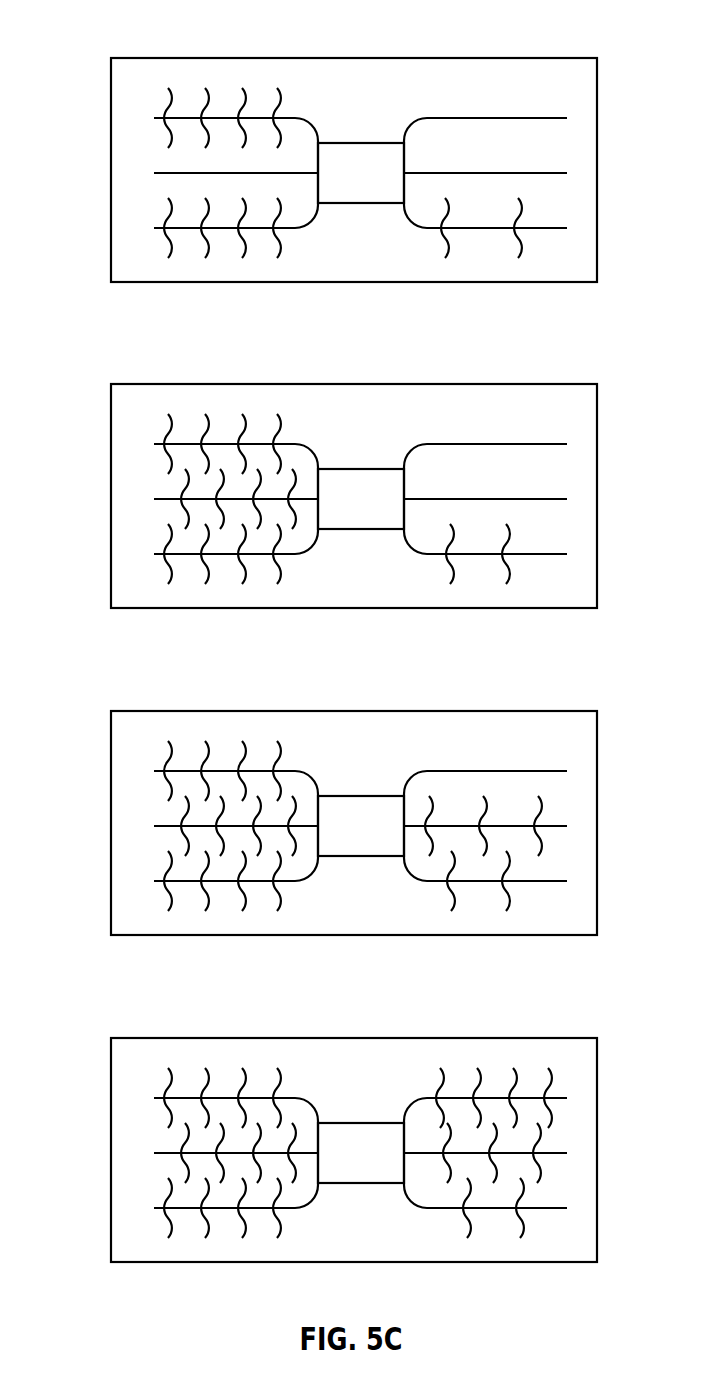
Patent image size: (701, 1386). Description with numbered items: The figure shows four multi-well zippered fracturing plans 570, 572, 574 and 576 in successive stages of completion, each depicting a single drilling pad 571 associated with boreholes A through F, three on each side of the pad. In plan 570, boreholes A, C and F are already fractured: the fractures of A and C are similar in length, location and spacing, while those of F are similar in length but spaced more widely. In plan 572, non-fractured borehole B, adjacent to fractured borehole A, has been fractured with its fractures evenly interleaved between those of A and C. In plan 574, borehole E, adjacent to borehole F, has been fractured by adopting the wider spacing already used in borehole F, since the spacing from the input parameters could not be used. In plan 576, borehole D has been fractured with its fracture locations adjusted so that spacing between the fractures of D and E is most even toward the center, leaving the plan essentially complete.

The multi-well zippered fracturing plan 570 is at (137, 42).
The drilling pad 571 is at (361, 663).
The multi-well zippered fracturing plan 572 is at (320, 467).
The multi-well zippered fracturing plan 574 is at (320, 794).
The multi-well zippered fracturing plan 576 is at (320, 1121).